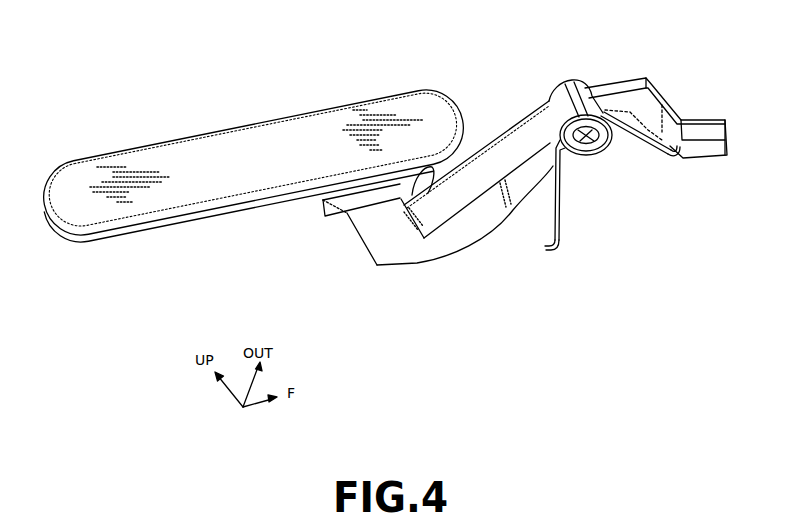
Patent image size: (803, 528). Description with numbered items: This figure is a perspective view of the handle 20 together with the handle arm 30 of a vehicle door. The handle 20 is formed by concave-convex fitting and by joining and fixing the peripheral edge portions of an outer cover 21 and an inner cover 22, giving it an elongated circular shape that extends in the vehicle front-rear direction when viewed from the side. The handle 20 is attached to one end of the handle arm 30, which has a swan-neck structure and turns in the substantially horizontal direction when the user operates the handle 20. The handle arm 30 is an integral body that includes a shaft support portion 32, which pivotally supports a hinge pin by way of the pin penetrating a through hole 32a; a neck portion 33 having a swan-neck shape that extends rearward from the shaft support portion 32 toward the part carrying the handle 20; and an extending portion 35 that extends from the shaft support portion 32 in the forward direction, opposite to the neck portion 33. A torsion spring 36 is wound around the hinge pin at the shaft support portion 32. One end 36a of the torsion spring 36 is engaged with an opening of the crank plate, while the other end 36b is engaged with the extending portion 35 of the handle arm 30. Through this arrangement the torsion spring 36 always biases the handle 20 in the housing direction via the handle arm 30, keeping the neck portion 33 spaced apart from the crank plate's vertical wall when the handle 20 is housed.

The handle 20 is at (299, 90).
The outer cover 21 is at (193, 150).
The inner cover 22 is at (261, 208).
The handle arm 30 is at (446, 267).
The shaft support portion 32 is at (555, 85).
The through hole 32a is at (597, 139).
The neck portion 33 is at (472, 231).
The extending portion 35 is at (663, 164).
The torsion spring 36 is at (562, 186).
The one end of torsion spring 36a is at (562, 251).
The other end of torsion spring 36b is at (680, 161).